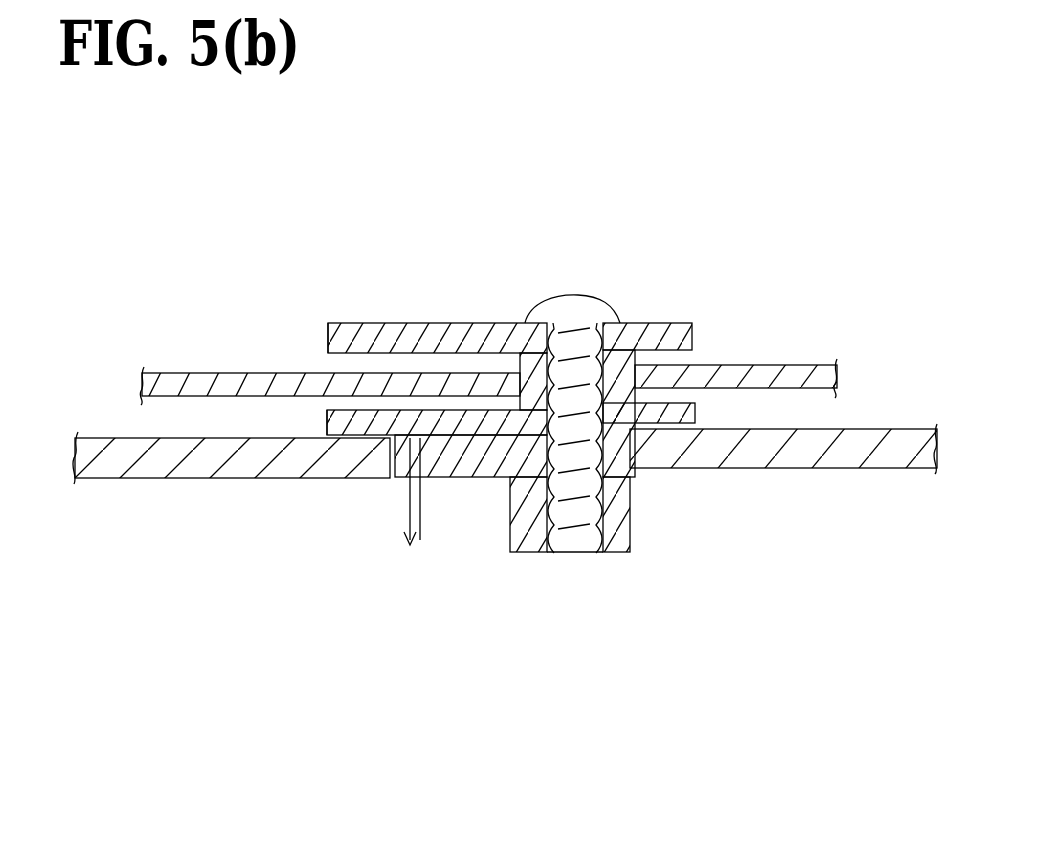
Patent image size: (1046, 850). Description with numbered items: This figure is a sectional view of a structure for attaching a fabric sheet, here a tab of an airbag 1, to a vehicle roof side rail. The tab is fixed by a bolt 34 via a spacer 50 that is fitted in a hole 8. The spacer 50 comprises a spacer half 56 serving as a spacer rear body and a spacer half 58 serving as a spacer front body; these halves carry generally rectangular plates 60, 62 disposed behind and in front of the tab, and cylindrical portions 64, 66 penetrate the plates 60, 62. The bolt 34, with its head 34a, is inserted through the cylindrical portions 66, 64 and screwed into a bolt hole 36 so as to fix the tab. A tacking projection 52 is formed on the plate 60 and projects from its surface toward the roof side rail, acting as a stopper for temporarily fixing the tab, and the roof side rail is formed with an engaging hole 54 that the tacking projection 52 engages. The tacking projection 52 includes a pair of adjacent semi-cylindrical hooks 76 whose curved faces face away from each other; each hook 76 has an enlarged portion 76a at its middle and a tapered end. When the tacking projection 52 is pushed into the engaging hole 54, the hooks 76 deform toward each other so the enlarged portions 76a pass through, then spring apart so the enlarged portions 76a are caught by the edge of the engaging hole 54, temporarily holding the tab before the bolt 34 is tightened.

The airbag 1 is at (488, 336).
The hole 8 is at (673, 320).
The bolt 34 is at (611, 378).
The screw head 34a is at (558, 300).
The bolt hole 36 is at (580, 553).
The spacer 50 is at (273, 263).
The tacking projection 52 is at (440, 581).
The engaging hole 54 is at (480, 478).
The spacer half 56 is at (708, 413).
The spacer half 58 is at (715, 331).
The plate 60 is at (318, 373).
The plate 62 is at (422, 322).
The cylindrical portion 64 is at (450, 322).
The cylindrical portion 66 is at (512, 320).
The semi-cylindrical hook 76 is at (379, 581).
The enlarged portion 76a is at (460, 483).